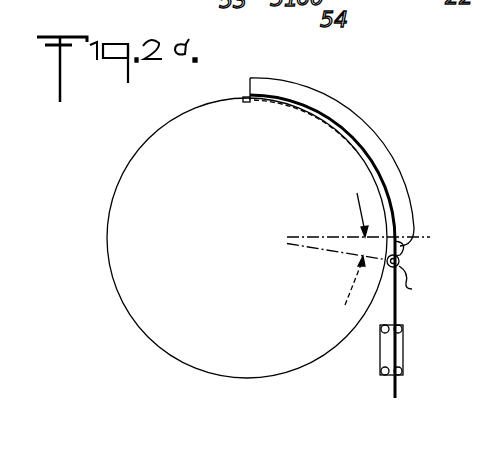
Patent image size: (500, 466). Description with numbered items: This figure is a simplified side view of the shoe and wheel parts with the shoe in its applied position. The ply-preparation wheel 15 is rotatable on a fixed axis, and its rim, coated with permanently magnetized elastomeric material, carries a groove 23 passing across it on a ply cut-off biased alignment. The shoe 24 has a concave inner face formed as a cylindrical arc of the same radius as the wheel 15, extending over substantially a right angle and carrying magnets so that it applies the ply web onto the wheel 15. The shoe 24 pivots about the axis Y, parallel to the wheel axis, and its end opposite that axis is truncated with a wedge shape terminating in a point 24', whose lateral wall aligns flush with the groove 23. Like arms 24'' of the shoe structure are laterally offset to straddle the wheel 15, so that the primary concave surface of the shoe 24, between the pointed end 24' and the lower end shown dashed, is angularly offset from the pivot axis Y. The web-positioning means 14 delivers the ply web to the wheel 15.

The ply-preparation wheel 15 is at (152, 137).
The groove 23 is at (243, 103).
The shoe 24 is at (332, 159).
The point 24' is at (225, 80).
The arms 24'' is at (435, 250).
The pivot axis Y is at (409, 275).
The web-positioning means 14 is at (408, 346).